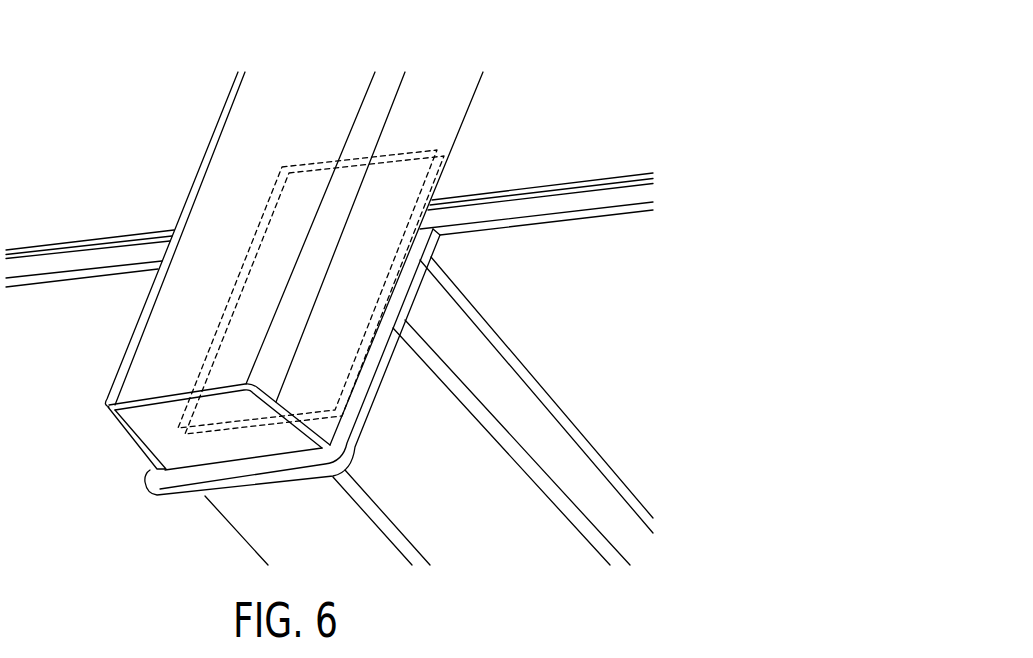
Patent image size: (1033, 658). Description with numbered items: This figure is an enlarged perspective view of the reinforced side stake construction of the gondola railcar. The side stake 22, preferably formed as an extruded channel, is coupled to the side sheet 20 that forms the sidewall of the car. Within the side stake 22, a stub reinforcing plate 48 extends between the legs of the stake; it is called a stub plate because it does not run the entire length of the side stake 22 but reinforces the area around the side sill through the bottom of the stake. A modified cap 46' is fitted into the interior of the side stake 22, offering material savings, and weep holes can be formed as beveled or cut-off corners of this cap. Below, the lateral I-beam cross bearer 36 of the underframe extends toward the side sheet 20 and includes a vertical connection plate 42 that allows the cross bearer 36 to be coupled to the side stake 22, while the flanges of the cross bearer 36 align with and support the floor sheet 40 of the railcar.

The side sheet 20 is at (585, 133).
The side stake 22 is at (300, 112).
The cross bearer 36 is at (490, 535).
The floor sheet 40 is at (573, 370).
The vertical connection plate 42 is at (212, 468).
The modified cap 46' is at (122, 514).
The stub reinforcing plate 48 is at (327, 390).